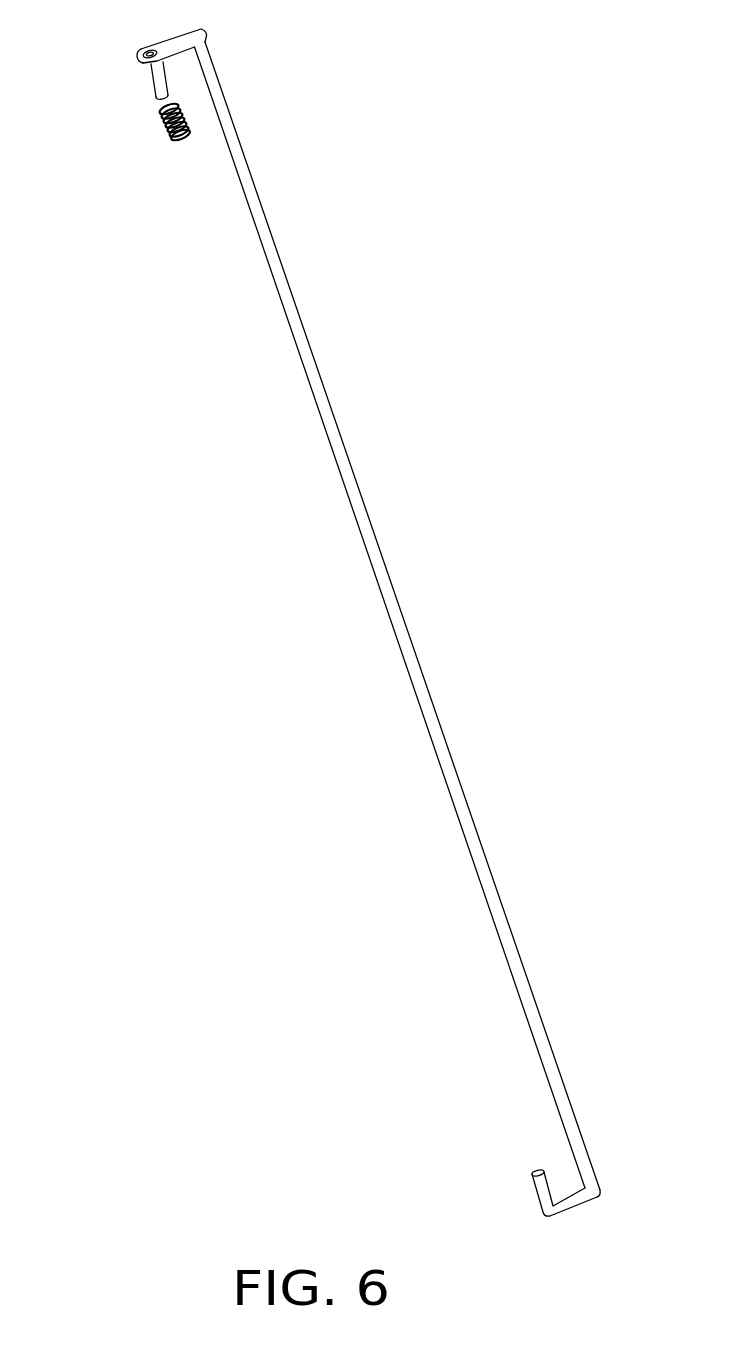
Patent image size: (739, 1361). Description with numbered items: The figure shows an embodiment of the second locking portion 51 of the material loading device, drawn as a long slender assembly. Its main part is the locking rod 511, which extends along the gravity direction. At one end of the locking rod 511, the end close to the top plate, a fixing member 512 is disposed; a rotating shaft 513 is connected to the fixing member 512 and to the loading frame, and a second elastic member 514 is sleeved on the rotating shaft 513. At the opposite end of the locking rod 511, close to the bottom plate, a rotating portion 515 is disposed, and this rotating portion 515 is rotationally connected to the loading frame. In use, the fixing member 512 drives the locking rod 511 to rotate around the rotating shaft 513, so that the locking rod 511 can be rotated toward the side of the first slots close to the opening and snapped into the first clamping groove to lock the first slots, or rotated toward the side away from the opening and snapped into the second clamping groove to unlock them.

The second locking portion 51 is at (340, 245).
The locking rod 511 is at (242, 172).
The fixing member 512 is at (174, 54).
The rotating shaft 513 is at (158, 88).
The second elastic member 514 is at (162, 132).
The rotating portion 515 is at (547, 1198).